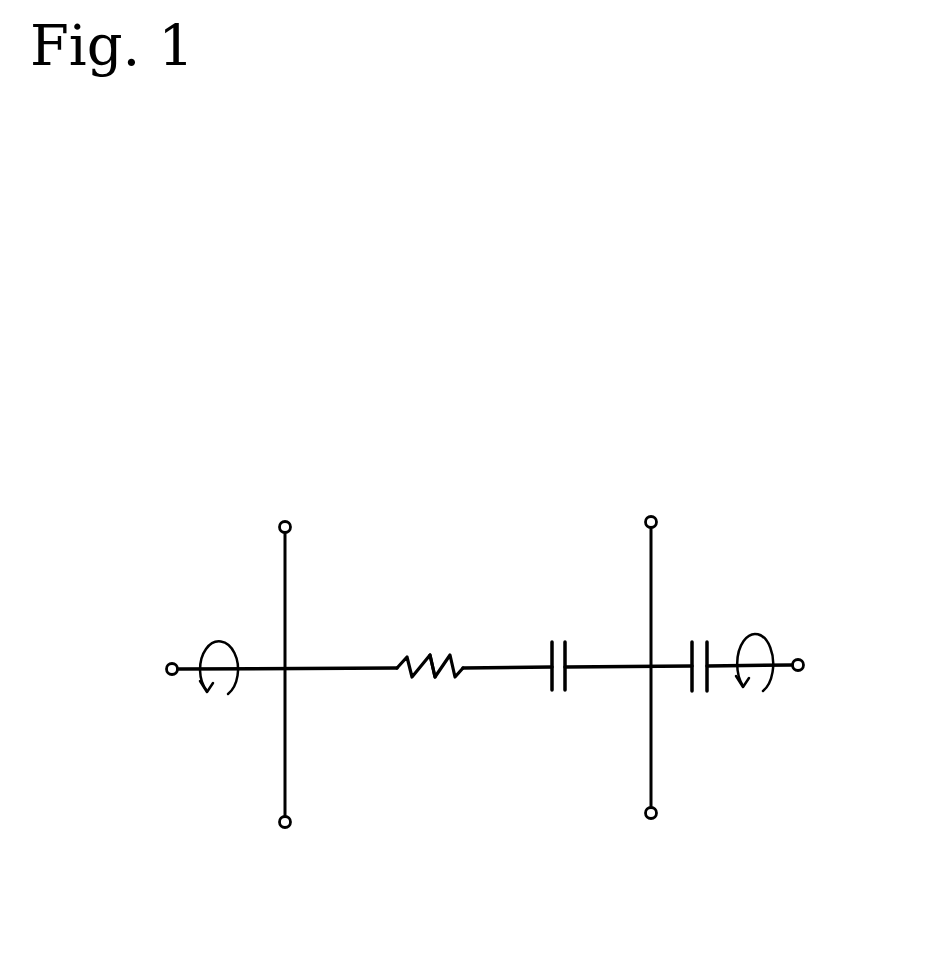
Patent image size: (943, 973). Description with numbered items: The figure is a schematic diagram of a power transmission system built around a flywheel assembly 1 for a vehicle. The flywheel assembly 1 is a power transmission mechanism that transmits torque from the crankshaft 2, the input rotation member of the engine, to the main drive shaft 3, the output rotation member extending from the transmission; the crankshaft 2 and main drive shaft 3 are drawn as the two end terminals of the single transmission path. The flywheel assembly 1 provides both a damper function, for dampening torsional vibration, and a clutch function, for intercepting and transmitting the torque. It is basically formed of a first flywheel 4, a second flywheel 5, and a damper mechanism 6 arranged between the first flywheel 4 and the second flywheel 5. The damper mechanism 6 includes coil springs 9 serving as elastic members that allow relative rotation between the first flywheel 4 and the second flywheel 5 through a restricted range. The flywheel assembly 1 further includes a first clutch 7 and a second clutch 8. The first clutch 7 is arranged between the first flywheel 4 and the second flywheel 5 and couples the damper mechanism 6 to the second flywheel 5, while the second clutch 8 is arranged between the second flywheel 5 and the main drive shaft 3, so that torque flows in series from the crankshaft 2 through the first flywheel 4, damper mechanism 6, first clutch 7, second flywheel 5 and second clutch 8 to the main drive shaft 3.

The flywheel assembly 1 is at (513, 487).
The crankshaft 2 is at (166, 666).
The main drive shaft 3 is at (804, 665).
The first flywheel 4 is at (284, 571).
The second flywheel 5 is at (652, 572).
The damper mechanism 6 is at (407, 625).
The first clutch 7 is at (555, 625).
The second clutch 8 is at (735, 622).
The coil springs 9 is at (432, 655).